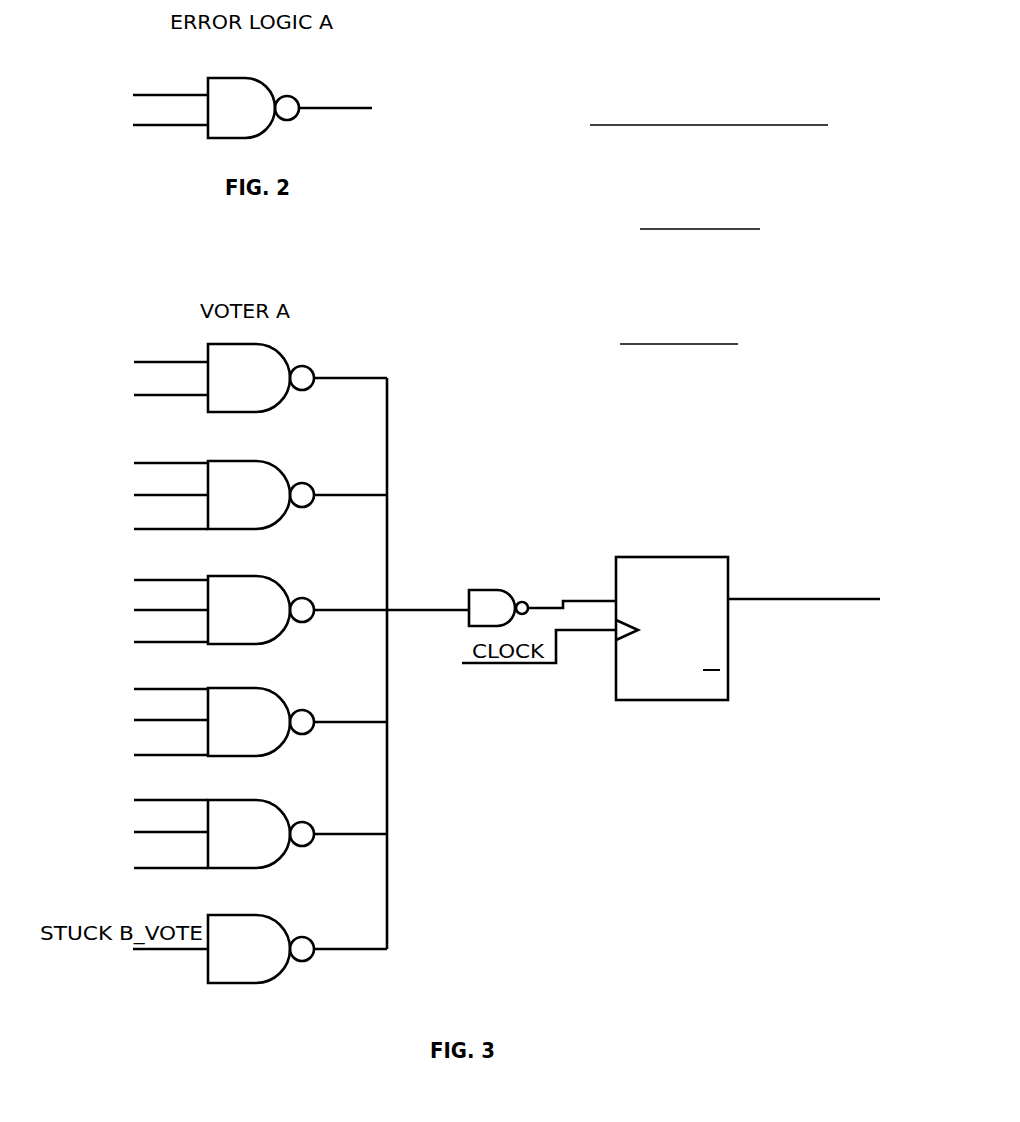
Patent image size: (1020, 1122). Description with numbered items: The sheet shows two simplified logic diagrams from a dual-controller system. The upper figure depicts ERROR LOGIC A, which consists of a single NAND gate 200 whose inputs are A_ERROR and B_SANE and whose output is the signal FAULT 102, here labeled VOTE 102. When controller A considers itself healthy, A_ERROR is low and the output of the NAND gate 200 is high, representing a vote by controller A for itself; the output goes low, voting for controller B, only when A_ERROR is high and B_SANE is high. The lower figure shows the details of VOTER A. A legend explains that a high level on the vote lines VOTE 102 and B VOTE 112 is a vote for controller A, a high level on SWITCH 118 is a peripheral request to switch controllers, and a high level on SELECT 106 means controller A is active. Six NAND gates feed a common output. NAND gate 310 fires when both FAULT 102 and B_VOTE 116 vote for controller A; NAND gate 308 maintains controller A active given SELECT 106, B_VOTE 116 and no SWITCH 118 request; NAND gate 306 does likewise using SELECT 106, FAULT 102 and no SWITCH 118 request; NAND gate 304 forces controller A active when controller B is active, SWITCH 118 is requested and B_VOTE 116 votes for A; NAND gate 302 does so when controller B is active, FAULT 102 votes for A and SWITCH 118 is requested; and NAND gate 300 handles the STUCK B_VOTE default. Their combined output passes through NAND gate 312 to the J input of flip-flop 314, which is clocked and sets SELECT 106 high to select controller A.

In FIG. 2, the NAND gate 200 is at (203, 104).
In FIG. 2, the FAULT signal 102 is at (348, 96).
In FIG. 3, the FAULT signal 102 is at (146, 601).
In FIG. 3, the SELECT connection 106 is at (472, 560).
In FIG. 3, the B_VOTE connection 112 is at (708, 142).
In FIG. 3, the B_VOTE interprocessor connection 116 is at (136, 560).
In FIG. 3, the SWITCH lead 118 is at (492, 519).
In FIG. 3, the NAND gate 300 is at (297, 949).
In FIG. 3, the NAND gate 302 is at (297, 834).
In FIG. 3, the NAND gate 304 is at (297, 722).
In FIG. 3, the NAND gate 306 is at (338, 610).
In FIG. 3, the NAND gate 308 is at (297, 495).
In FIG. 3, the NAND gate 310 is at (297, 378).
In FIG. 3, the NAND gate 312 is at (542, 608).
In FIG. 3, the flip-flop 314 is at (672, 628).